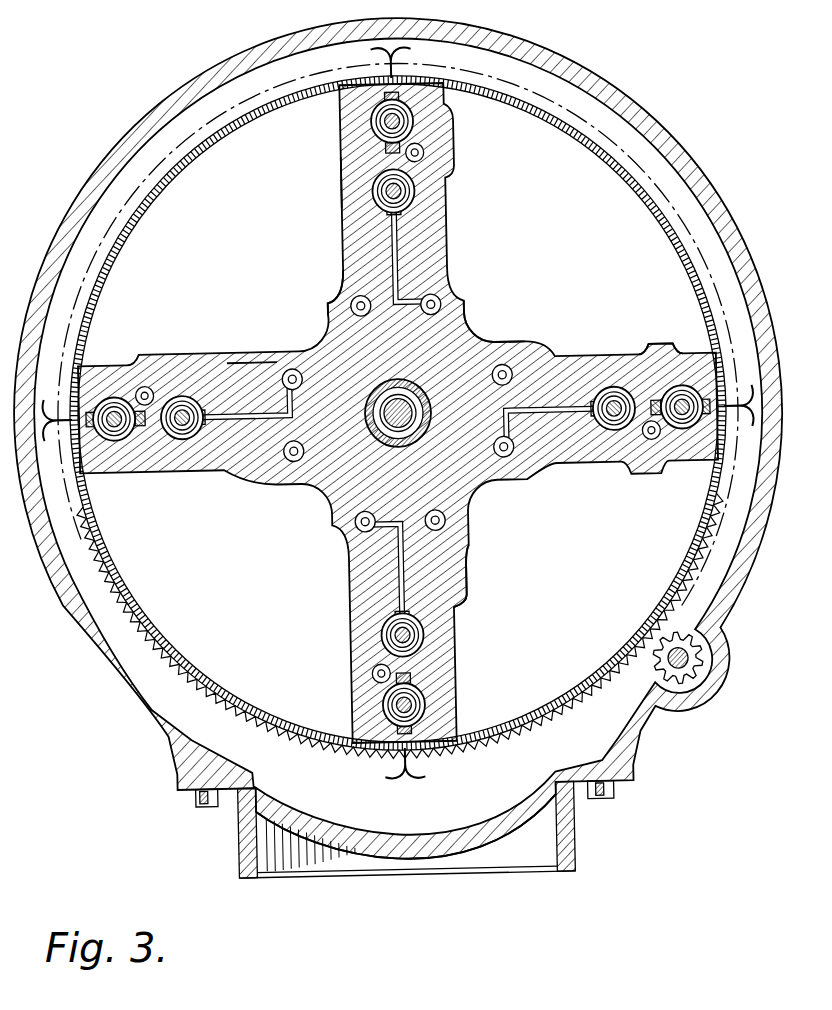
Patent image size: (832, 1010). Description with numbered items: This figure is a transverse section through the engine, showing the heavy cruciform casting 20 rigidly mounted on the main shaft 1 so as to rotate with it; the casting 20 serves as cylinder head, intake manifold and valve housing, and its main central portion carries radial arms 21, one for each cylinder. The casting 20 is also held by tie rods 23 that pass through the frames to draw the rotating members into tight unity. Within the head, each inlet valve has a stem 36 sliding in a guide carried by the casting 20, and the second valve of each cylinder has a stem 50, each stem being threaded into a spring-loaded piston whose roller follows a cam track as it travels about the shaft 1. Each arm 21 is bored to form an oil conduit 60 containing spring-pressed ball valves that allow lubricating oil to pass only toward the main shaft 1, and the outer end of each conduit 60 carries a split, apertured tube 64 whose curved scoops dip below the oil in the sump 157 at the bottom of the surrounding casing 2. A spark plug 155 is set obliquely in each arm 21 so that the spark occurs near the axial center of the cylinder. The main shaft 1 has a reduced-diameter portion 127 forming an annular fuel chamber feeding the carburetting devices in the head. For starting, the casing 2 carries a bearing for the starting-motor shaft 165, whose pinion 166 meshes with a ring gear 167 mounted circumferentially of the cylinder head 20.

The main shaft 1 is at (467, 346).
The casing 2 is at (675, 137).
The casting 20 is at (343, 350).
The arm 21 is at (346, 199).
The tie rod 23 is at (333, 313).
The stem 36 is at (411, 191).
The stem 50 is at (411, 123).
The oil conduit 60 is at (557, 403).
The tube 64 is at (410, 60).
The reduced-diameter portion of main shaft 127 is at (413, 411).
The spark plug 155 is at (170, 398).
The sump 157 is at (522, 846).
The shaft 165 is at (688, 664).
The pinion 166 is at (705, 659).
The ring gear 167 is at (575, 120).